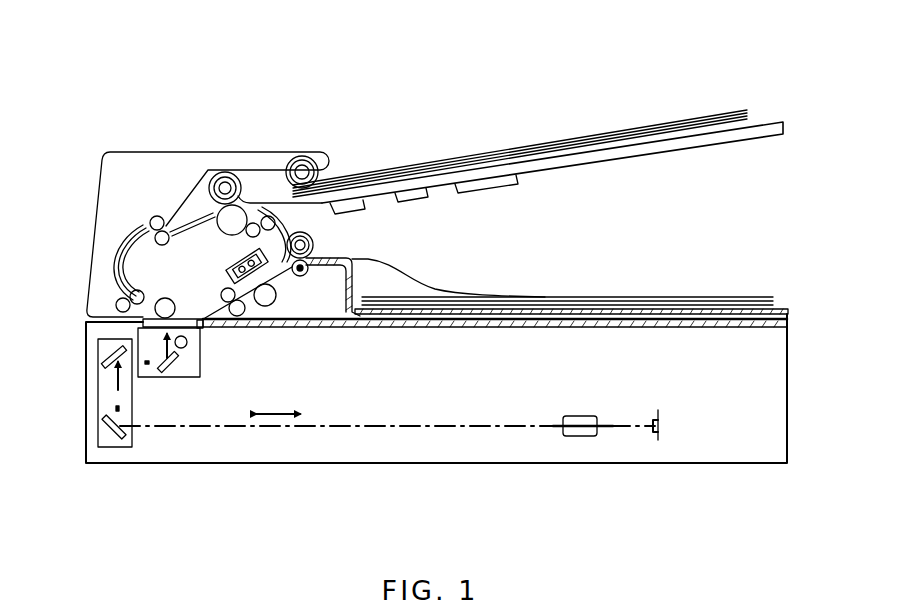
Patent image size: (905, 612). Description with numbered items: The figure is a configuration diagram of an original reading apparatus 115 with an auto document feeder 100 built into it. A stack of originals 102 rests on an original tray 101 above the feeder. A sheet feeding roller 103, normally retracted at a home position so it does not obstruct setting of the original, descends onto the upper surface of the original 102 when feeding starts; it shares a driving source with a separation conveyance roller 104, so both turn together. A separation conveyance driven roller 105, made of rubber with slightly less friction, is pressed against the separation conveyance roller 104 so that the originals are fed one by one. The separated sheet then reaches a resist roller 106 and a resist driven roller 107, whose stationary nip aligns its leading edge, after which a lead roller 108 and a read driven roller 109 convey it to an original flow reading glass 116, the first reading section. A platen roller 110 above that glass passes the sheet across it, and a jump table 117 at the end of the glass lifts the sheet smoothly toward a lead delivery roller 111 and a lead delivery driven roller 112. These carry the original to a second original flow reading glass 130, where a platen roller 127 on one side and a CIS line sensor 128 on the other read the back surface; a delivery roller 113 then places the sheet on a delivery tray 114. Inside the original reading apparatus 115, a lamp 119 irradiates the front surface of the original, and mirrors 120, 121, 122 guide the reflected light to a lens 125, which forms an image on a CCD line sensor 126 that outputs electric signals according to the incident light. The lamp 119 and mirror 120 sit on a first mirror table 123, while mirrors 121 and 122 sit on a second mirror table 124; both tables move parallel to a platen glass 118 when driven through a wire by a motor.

The auto document feeder 100 is at (575, 93).
The original tray 101 is at (760, 140).
The original 102 is at (747, 118).
The sheet feeding roller 103 is at (302, 156).
The separation conveyance roller 104 is at (212, 178).
The separation conveyance driven roller 105 is at (236, 205).
The resist roller 106 is at (162, 231).
The resist driven roller 107 is at (150, 220).
The lead roller 108 is at (130, 297).
The read driven roller 109 is at (116, 305).
The platen roller 110 is at (122, 250).
The lead delivery roller 111 is at (221, 292).
The lead delivery driven roller 112 is at (244, 314).
The delivery roller 113 is at (352, 262).
The delivery tray 114 is at (790, 300).
The original reading apparatus 115 is at (789, 420).
The original flow reading glass 116 is at (138, 330).
The jump table 117 is at (212, 329).
The platen glass 118 is at (789, 325).
The lamp 119 is at (181, 348).
The mirror 120 is at (163, 378).
The mirror 121 is at (102, 366).
The mirror 122 is at (104, 430).
The first mirror table 123 is at (201, 365).
The second mirror table 124 is at (112, 447).
The lens 125 is at (580, 438).
The CCD line sensor 126 is at (660, 441).
The platen roller 127 is at (275, 302).
The CIS line sensor 128 is at (240, 262).
The original flow reading glass 130 is at (306, 276).